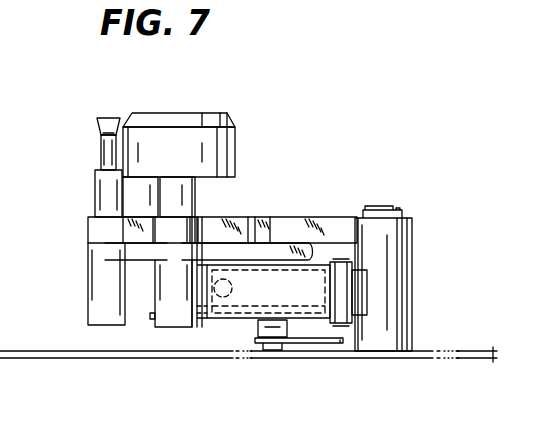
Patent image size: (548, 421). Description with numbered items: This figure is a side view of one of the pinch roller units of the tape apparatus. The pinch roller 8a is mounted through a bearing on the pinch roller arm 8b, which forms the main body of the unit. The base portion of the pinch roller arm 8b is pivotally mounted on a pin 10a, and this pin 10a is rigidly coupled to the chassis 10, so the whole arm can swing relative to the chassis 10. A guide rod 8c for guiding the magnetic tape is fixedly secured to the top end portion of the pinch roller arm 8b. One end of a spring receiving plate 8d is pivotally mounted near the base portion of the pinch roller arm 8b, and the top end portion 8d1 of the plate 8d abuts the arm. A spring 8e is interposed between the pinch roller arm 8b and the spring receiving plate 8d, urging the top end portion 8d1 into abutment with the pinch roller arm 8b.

The pinch roller 8a is at (237, 142).
The pinch roller arm 8b is at (312, 217).
The guide rod 8c is at (103, 152).
The spring receiving plate 8d is at (303, 295).
The top end portion 8d1 is at (152, 318).
The spring 8e is at (233, 297).
The chassis 10 is at (458, 351).
The pin 10a is at (383, 208).